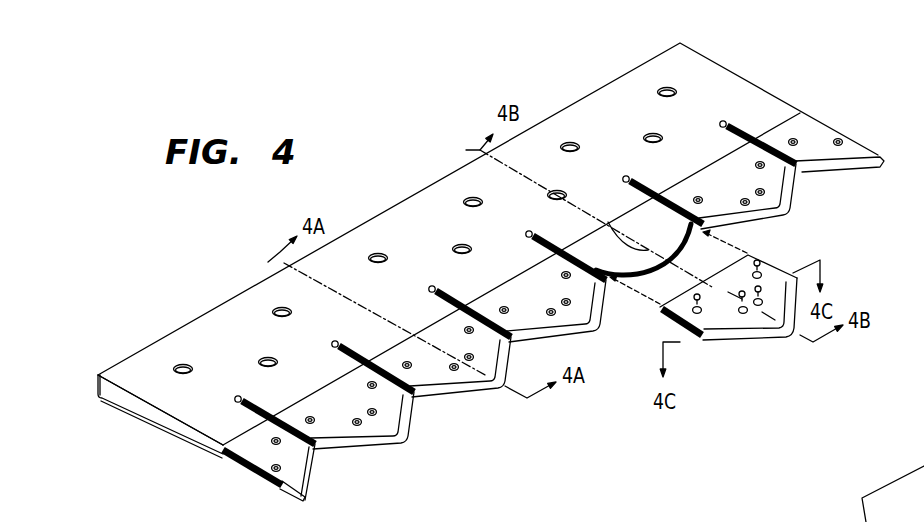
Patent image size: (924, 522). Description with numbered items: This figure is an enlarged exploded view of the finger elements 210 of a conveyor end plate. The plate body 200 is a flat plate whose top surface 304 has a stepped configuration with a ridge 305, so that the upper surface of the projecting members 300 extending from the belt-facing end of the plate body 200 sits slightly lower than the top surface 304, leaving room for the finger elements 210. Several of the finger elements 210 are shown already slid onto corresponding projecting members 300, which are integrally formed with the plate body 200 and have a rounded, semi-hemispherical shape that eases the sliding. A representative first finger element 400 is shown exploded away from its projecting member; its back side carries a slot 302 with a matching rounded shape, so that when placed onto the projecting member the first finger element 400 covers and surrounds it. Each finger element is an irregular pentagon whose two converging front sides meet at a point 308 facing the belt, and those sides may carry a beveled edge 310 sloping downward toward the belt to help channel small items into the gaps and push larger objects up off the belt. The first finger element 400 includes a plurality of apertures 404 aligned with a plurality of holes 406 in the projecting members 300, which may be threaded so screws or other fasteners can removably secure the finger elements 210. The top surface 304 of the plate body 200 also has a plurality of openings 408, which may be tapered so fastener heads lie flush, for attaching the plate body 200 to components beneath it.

The plate body 200 is at (718, 64).
The plurality of finger elements 210 is at (505, 424).
The plurality of projecting members 300 is at (644, 222).
The slot 302 is at (657, 331).
The top surface 304 is at (215, 337).
The ridge 305 is at (806, 114).
The point 308 is at (797, 333).
The beveled edge 310 is at (738, 328).
The first finger element 400 is at (732, 310).
The plurality of apertures 404 is at (750, 282).
The plurality of holes 406 is at (600, 256).
The plurality of openings 408 is at (472, 206).